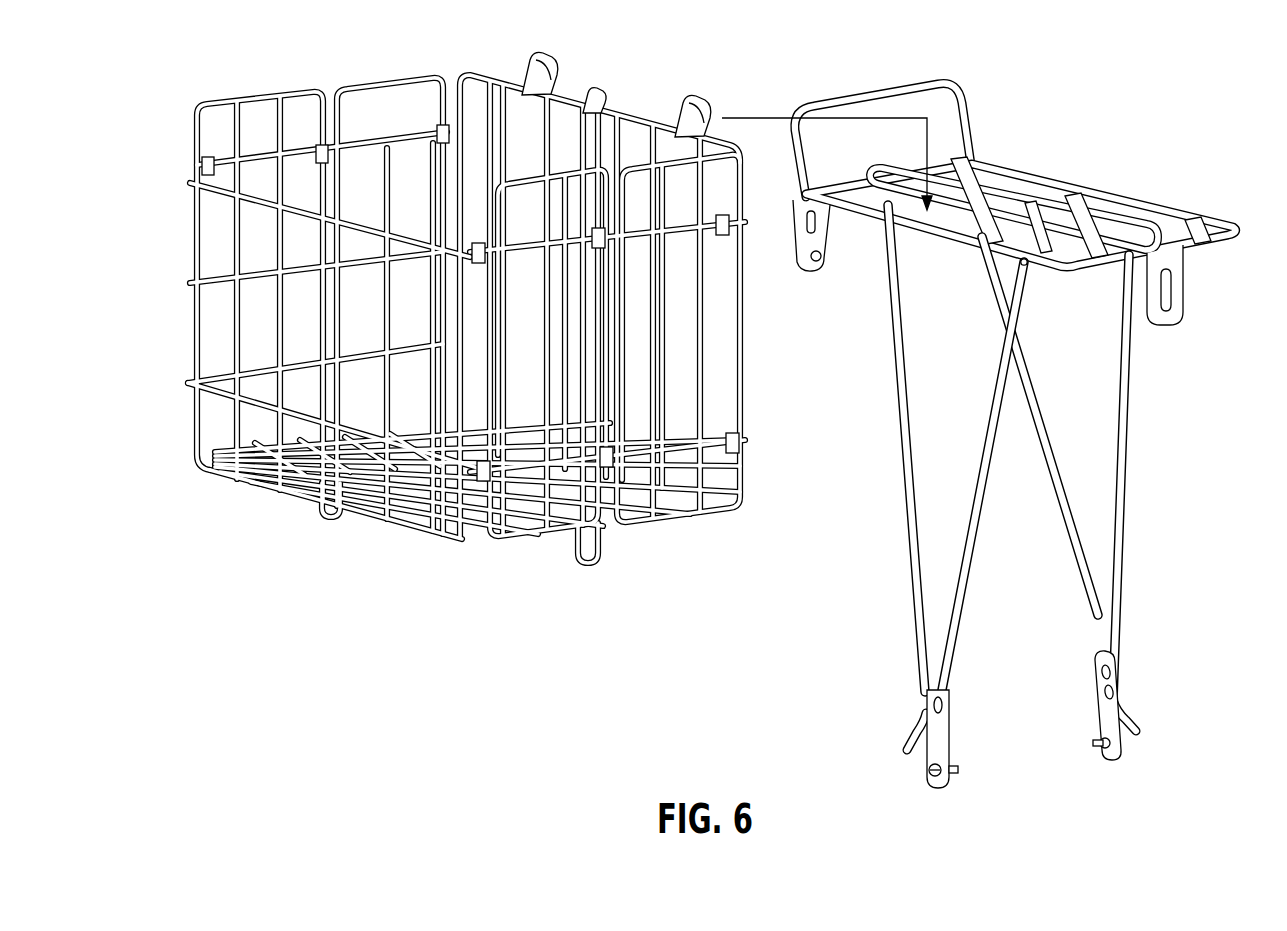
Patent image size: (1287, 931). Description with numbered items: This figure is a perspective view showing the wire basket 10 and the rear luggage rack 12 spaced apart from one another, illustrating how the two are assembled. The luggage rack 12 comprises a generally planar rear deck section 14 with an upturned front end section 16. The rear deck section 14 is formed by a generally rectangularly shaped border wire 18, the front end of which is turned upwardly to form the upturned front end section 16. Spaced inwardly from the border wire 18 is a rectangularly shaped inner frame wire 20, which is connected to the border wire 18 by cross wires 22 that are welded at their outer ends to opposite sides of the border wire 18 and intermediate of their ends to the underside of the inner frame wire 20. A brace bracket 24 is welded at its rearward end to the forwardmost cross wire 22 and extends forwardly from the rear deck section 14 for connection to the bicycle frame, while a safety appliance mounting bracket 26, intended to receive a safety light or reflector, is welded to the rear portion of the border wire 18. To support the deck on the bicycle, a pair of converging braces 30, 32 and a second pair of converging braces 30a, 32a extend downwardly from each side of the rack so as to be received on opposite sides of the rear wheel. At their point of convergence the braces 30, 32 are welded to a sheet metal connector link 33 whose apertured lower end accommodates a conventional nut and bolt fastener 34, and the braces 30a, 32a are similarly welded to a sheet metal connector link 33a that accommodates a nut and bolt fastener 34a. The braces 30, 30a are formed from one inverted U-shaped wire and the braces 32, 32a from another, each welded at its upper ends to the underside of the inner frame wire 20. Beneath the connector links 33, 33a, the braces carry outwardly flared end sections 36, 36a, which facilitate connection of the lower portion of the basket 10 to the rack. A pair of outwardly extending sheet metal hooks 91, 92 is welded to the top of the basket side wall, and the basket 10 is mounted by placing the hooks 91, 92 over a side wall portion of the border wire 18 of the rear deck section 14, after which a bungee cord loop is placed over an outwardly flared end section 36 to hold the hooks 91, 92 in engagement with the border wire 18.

The basket 10 is at (205, 86).
The luggage rack 12 is at (980, 421).
The rear deck section 14 is at (1150, 207).
The upturned front end section 16 is at (837, 98).
The border wire 18 is at (1021, 201).
The inner frame wire 20 is at (893, 170).
The cross wires 22 is at (963, 165).
The brace bracket 24 is at (820, 273).
The safety appliance mounting bracket 26 is at (1165, 325).
The brace 30 is at (913, 413).
The brace 30a is at (1043, 400).
The brace 32 is at (967, 593).
The brace 32a is at (1130, 510).
The sheet metal connector link 33 is at (930, 770).
The sheet metal connector link 33a is at (1095, 693).
The nut and bolt fastener 34 is at (958, 770).
The nut and bolt fastener 34a is at (1091, 743).
The outwardly flared end section 36 is at (906, 743).
The outwardly flared end section 36a is at (1141, 725).
The sheet metal hook 91 is at (692, 99).
The sheet metal hook 92 is at (548, 70).